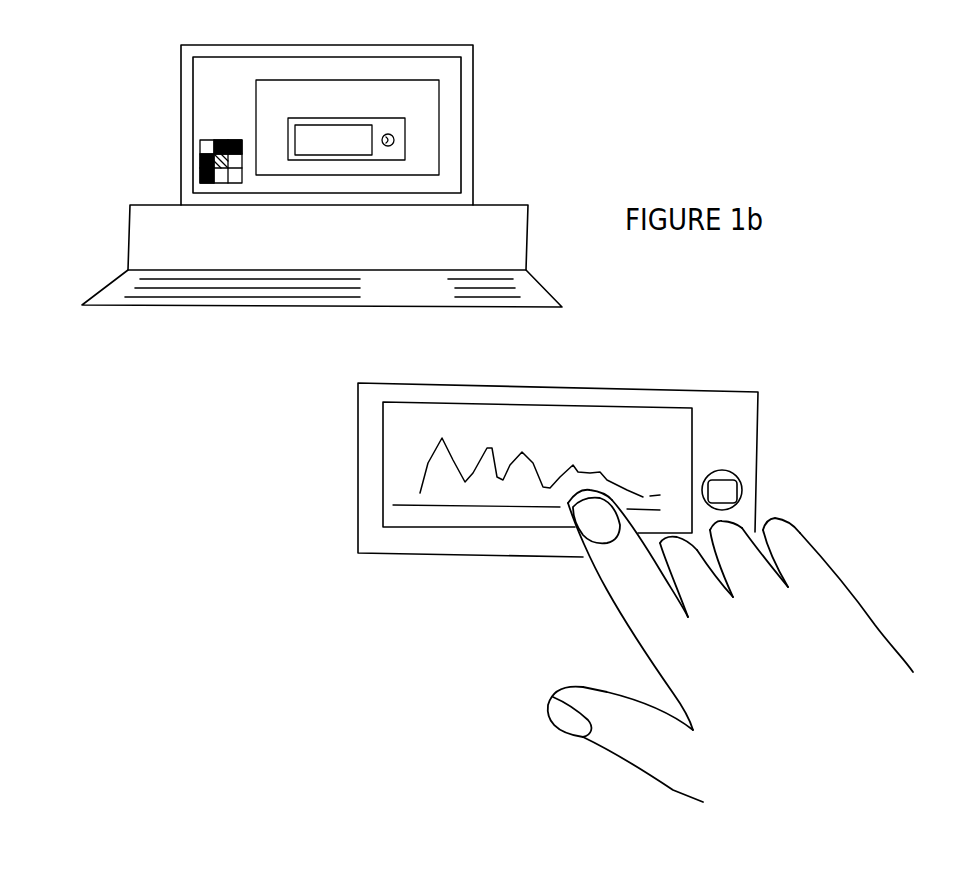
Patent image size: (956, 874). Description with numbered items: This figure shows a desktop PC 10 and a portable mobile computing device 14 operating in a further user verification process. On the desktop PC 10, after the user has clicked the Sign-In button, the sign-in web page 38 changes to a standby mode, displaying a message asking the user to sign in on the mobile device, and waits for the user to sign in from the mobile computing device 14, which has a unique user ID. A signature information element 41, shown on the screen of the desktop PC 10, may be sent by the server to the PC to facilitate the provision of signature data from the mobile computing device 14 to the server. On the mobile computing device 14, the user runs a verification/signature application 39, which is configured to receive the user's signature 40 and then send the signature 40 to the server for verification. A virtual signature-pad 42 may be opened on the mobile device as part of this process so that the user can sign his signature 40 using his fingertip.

The desktop PC 10 is at (185, 70).
The signature information element 41 is at (217, 138).
The sign-in web page 38 is at (422, 177).
The portable mobile computing device 14 is at (753, 425).
The verification/signature application 39 is at (642, 422).
The signature 40 is at (430, 467).
The virtual signature-pad 42 is at (403, 520).